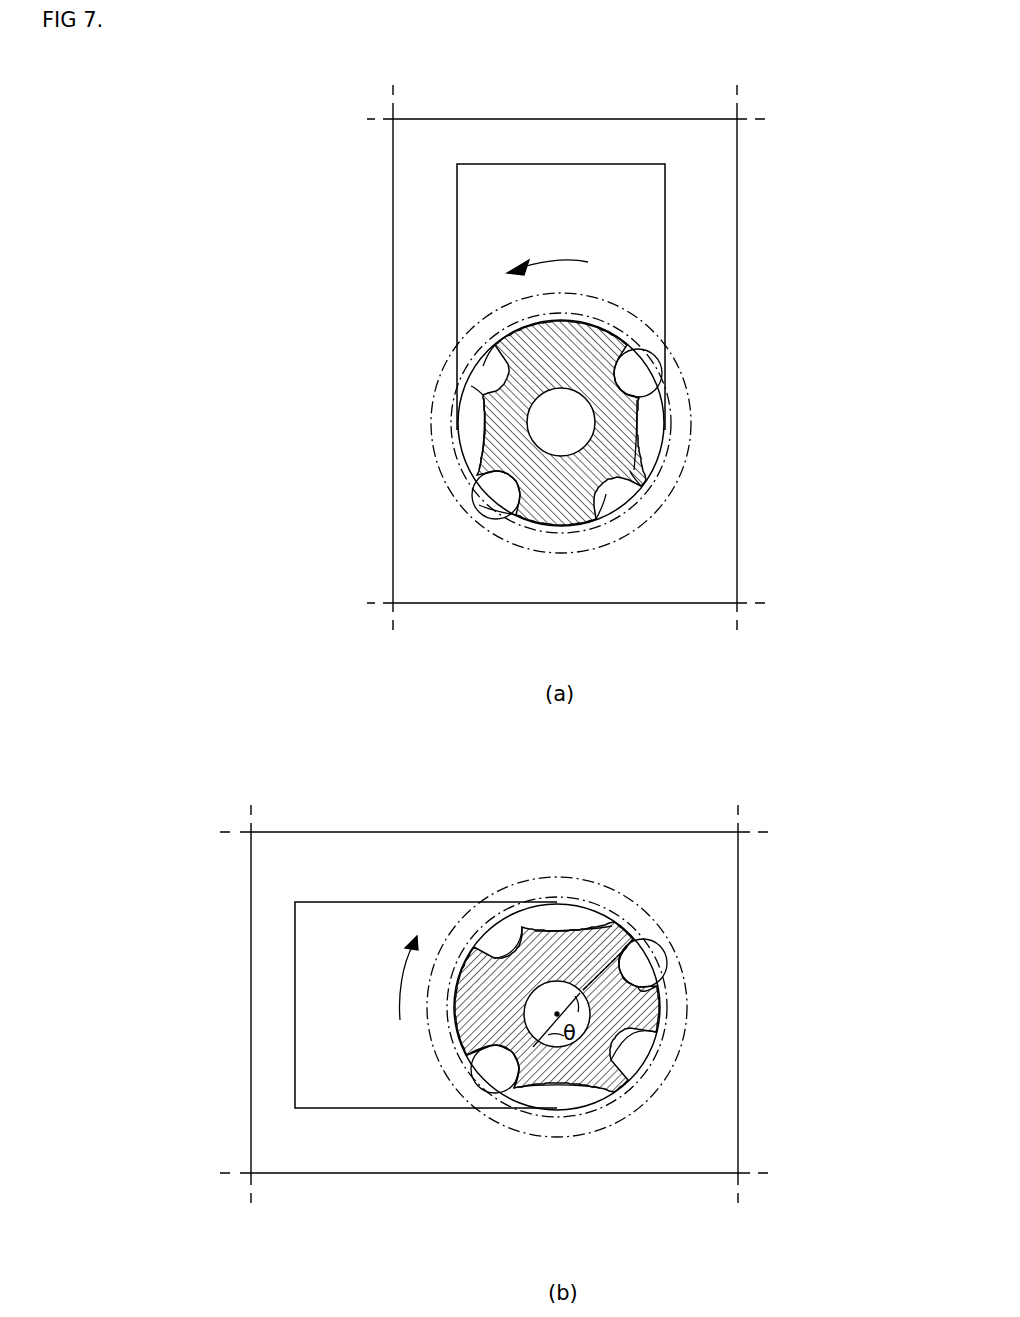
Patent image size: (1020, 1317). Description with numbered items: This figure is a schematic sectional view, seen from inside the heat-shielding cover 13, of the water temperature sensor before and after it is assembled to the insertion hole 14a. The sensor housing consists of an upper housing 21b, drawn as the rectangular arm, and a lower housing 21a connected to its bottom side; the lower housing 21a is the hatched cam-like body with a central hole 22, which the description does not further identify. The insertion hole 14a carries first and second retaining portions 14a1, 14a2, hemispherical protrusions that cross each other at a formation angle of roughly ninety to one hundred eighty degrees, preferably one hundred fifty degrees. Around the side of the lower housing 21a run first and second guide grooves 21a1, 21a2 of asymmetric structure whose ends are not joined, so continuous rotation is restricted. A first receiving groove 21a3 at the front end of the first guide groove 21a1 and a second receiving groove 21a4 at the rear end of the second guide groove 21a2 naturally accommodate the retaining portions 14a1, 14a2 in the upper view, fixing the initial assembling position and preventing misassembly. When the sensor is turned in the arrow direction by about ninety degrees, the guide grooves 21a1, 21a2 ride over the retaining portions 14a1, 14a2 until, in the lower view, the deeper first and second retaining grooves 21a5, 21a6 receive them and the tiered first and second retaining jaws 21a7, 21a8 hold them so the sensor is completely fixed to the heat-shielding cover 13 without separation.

The heat-shielding cover 13 is at (417, 186).
The upper housing 21b is at (560, 163).
The lower housing 21a is at (560, 528).
The first guide groove 21a1 is at (650, 446).
The second guide groove 21a2 is at (482, 445).
The first receiving groove 21a3 is at (606, 342).
The second receiving groove 21a4 is at (493, 518).
The first retaining groove 21a5 is at (606, 527).
The second retaining groove 21a6 is at (492, 346).
The first retaining jaw 21a7 is at (643, 487).
The second retaining jaw 21a8 is at (462, 383).
The shaft hole 22 is at (558, 426).
The insertion hole 14a is at (457, 437).
The first retaining portion 14a1 is at (641, 388).
The second retaining portion 14a2 is at (487, 492).